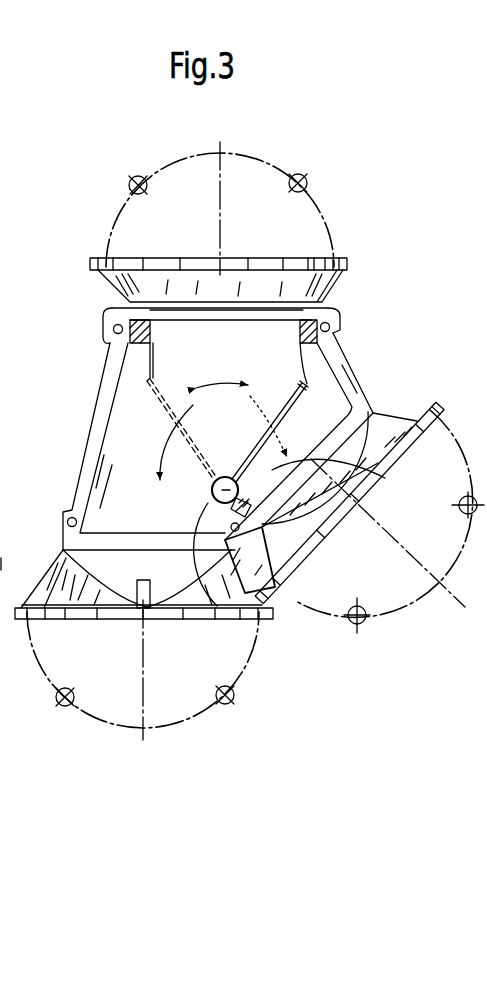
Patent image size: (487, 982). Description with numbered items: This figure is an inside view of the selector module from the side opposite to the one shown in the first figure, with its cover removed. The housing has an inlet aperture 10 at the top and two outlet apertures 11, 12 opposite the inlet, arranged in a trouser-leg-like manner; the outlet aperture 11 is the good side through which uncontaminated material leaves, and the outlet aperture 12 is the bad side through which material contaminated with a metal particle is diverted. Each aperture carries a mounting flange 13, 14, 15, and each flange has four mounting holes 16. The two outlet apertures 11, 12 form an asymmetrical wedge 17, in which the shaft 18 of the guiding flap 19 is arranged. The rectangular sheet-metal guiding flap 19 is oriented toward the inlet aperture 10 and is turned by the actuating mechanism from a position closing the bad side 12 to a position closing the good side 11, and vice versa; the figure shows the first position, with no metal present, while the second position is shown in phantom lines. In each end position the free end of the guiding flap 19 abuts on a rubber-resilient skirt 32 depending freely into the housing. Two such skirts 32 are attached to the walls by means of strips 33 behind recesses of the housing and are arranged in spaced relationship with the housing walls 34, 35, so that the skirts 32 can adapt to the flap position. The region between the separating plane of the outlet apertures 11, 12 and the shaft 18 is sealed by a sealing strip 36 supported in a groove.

The inlet aperture 10 is at (234, 254).
The outlet aperture (good side) 11 is at (152, 628).
The outlet aperture (bad side) 12 is at (367, 538).
The mounting flange 13 is at (128, 260).
The mounting flange 14 is at (307, 550).
The mounting flange 15 is at (88, 617).
The mounting holes 16 is at (306, 178).
The asymmetrical wedge 17 is at (222, 618).
The shaft 18 is at (222, 489).
The guiding flap 19 is at (258, 440).
The rubber-resilient skirt 32 is at (146, 350).
The strips 33 is at (108, 342).
The housing wall 34 is at (96, 428).
The housing wall 35 is at (357, 383).
The sealing strip 36 is at (378, 468).